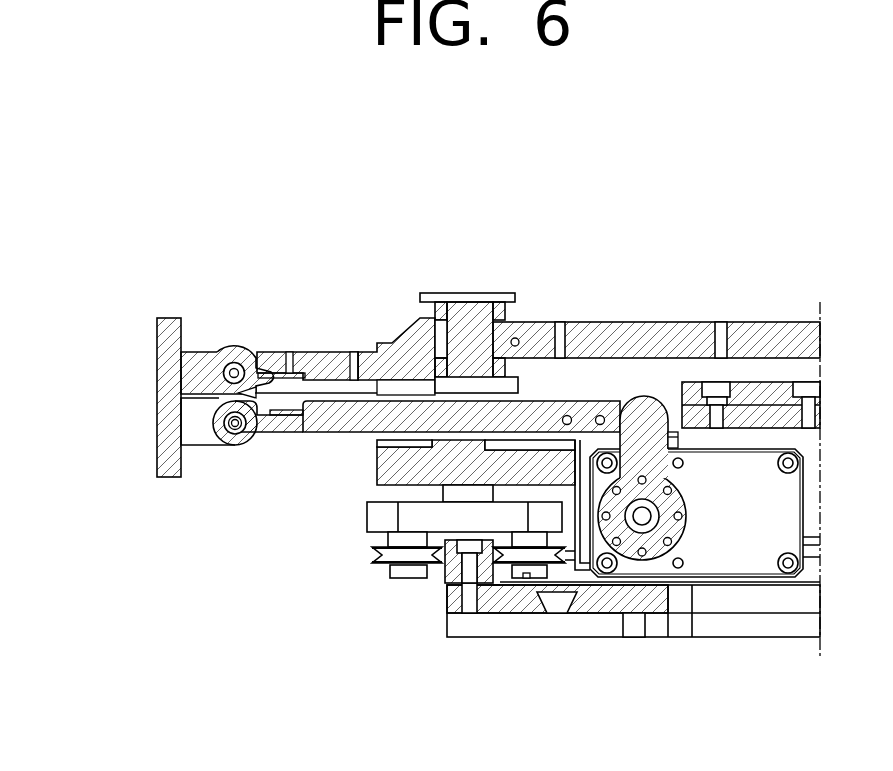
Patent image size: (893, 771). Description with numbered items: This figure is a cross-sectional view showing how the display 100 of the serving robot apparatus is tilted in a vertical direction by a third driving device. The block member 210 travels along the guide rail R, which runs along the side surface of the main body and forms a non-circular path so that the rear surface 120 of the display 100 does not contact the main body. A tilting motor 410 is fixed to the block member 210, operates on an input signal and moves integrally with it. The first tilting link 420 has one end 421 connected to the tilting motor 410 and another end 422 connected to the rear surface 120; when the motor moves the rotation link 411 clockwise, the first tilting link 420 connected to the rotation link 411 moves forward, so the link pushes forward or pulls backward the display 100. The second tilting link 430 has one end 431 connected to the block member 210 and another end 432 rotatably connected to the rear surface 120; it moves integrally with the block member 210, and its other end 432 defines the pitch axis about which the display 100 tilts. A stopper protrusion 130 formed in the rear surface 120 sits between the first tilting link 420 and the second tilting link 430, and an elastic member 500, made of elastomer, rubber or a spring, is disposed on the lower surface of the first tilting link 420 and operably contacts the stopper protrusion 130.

The display 100 is at (165, 358).
The rear surface 120 is at (166, 330).
The stopper protrusion 130 is at (232, 390).
The other end of the second tilting link 432 is at (233, 348).
The another end of the first tilting link 422 is at (228, 438).
The elastic member 500 is at (288, 371).
The second tilting link 430 is at (330, 363).
The one end of the second tilting link 431 is at (403, 365).
The first tilting link 420 is at (475, 413).
The one end of the first tilting link 421 is at (623, 397).
The rotation link 411 is at (670, 417).
The tilting motor 410 is at (727, 572).
The block member 210 is at (382, 467).
The guide rail R is at (450, 573).